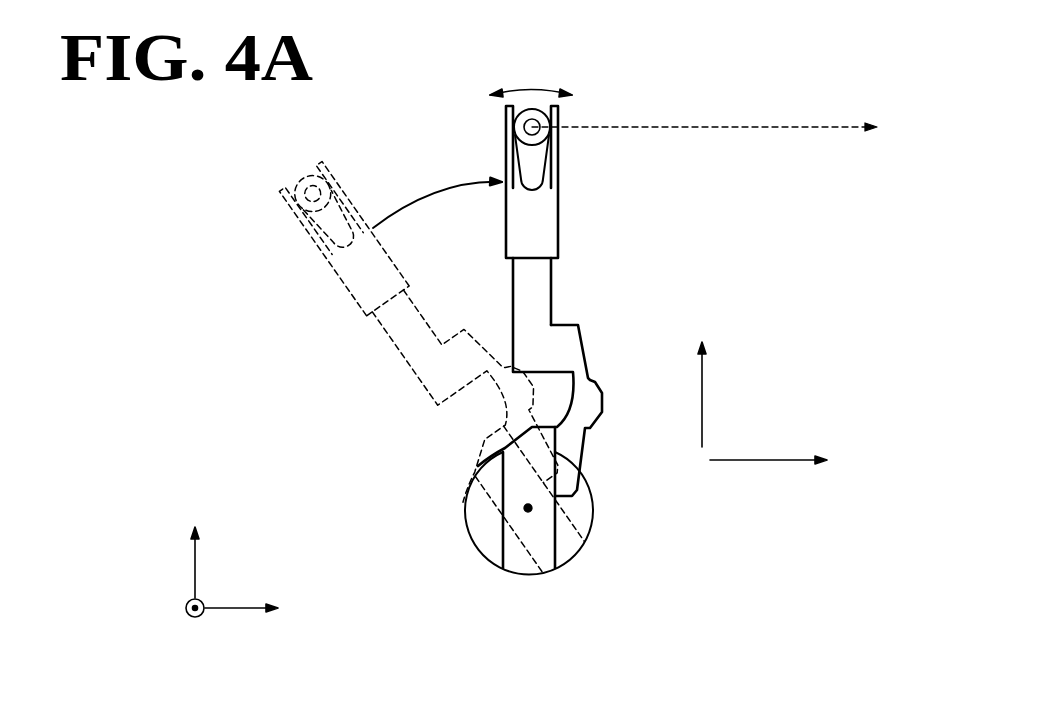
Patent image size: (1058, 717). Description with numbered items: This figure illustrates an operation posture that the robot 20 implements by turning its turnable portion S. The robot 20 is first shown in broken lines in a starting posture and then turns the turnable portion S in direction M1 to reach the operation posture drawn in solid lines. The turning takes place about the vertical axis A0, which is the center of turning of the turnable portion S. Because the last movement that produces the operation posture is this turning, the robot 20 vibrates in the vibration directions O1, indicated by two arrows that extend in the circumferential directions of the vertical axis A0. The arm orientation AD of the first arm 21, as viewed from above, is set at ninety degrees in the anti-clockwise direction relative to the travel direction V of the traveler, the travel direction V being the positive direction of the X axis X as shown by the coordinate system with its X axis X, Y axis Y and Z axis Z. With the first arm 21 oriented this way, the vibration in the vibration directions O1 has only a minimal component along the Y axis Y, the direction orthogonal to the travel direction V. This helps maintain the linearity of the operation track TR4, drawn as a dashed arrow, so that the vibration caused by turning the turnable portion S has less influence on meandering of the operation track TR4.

The robot 20 is at (592, 337).
The first arm 21 is at (593, 395).
The turnable portion S is at (542, 540).
The vertical axis A0 is at (526, 507).
The vibration directions O1 is at (533, 88).
The operation track TR4 is at (712, 126).
The direction M1 is at (432, 190).
The arm orientation AD is at (703, 400).
The travel direction V is at (760, 462).
The X axis X is at (248, 621).
The Y axis Y is at (186, 555).
The Z axis Z is at (185, 618).